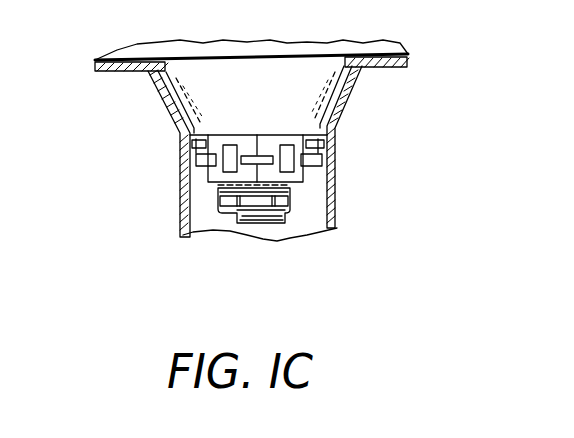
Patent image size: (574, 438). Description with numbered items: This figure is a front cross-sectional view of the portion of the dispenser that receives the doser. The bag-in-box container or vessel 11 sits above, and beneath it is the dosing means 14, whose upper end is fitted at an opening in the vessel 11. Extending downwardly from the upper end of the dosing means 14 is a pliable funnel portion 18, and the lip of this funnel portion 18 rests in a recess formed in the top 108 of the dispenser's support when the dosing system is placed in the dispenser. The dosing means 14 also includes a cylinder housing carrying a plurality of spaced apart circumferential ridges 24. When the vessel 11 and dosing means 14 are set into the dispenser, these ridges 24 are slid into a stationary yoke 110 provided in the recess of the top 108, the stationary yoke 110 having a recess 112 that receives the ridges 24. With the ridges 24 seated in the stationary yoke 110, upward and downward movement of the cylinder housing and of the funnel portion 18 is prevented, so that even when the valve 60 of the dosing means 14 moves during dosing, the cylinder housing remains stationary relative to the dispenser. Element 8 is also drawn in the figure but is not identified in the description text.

The top of support 108 is at (95, 59).
The vessel 11 is at (186, 50).
The funnel portion 18 is at (271, 72).
The circumferential ridges 24 is at (209, 153).
The stationary yoke 110 is at (333, 141).
The recess of stationary yoke 112 is at (323, 160).
The dosing means 14 is at (209, 203).
The valve 60 is at (258, 217).
The lead element 8 is at (291, 211).